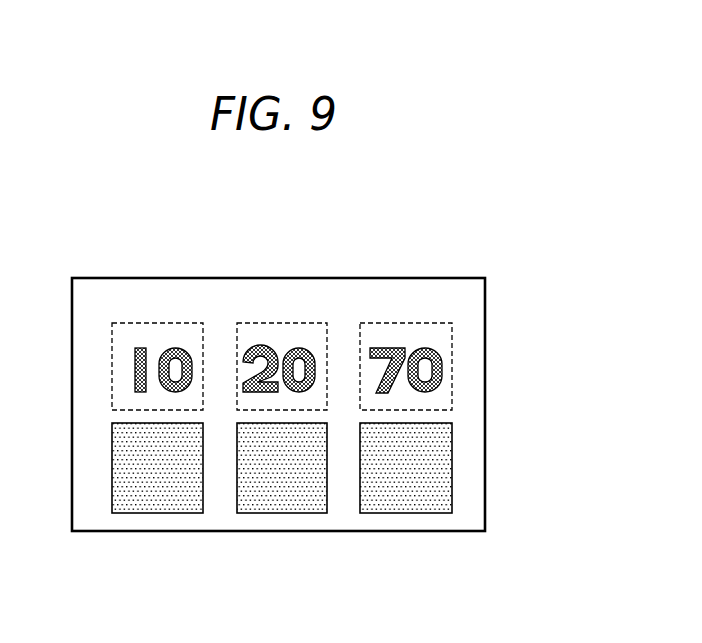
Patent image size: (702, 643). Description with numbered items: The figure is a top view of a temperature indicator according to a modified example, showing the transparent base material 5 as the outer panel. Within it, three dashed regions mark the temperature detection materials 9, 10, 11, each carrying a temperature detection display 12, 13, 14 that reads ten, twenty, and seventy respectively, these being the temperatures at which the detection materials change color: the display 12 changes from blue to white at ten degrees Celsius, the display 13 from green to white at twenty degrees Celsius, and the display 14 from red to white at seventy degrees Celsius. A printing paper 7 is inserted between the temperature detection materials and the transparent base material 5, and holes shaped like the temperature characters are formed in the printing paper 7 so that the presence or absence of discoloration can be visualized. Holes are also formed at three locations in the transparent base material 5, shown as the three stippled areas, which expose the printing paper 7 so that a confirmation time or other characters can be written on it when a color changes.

The transparent base material 5 is at (476, 396).
The printing paper 7 is at (163, 497).
The temperature detection material 9 is at (137, 322).
The temperature detection material 10 is at (269, 322).
The temperature detection material 11 is at (392, 322).
The temperature detection display 12 is at (172, 350).
The temperature detection display 13 is at (299, 350).
The temperature detection display 14 is at (420, 350).